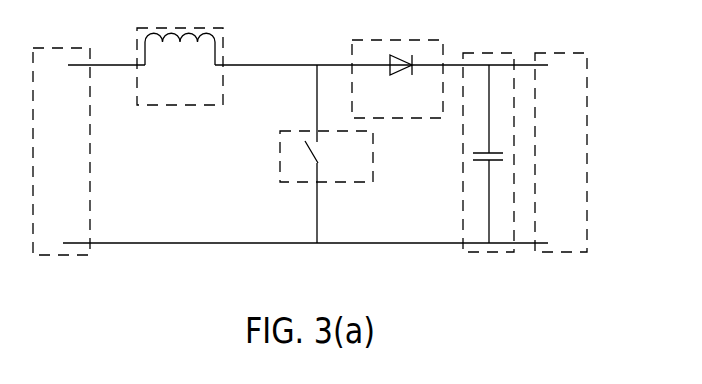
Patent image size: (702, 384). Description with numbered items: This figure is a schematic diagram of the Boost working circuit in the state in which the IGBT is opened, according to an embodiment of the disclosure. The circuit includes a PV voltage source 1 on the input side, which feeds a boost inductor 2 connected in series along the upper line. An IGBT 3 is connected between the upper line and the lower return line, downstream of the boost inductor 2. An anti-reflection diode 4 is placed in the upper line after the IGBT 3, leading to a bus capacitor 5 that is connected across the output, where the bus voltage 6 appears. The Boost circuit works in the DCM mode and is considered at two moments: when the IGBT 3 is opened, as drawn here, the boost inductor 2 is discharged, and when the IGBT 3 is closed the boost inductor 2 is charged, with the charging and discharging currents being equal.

The PV voltage source 1 is at (61, 140).
The boost inductor 2 is at (180, 56).
The IGBT 3 is at (326, 154).
The anti-reflection diode 4 is at (397, 67).
The bus capacitor 5 is at (488, 141).
The bus voltage 6 is at (561, 142).